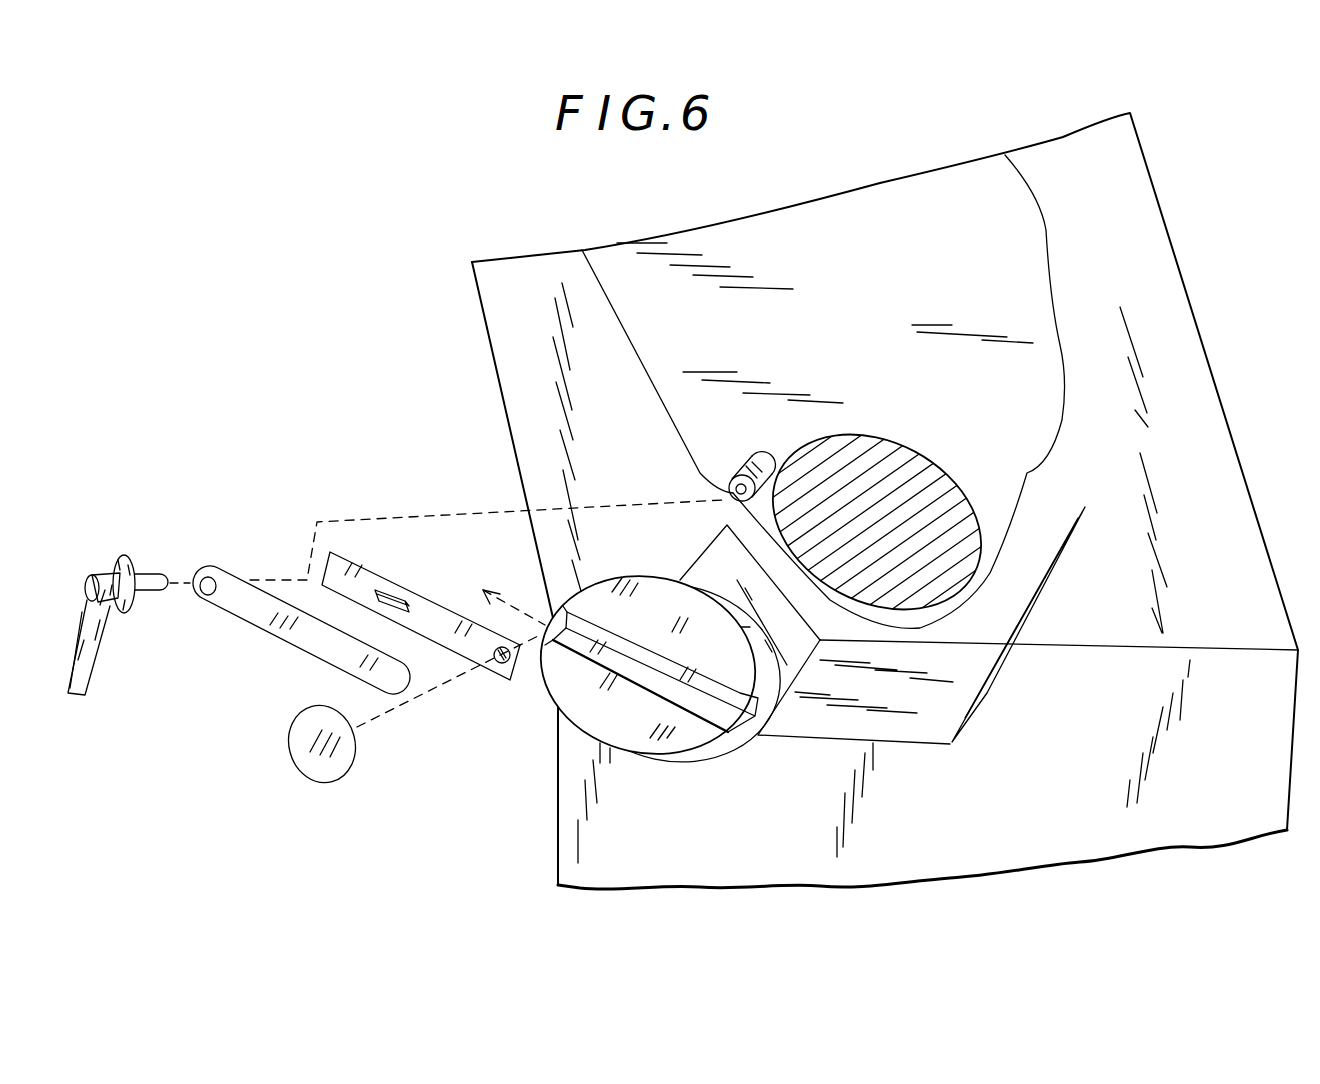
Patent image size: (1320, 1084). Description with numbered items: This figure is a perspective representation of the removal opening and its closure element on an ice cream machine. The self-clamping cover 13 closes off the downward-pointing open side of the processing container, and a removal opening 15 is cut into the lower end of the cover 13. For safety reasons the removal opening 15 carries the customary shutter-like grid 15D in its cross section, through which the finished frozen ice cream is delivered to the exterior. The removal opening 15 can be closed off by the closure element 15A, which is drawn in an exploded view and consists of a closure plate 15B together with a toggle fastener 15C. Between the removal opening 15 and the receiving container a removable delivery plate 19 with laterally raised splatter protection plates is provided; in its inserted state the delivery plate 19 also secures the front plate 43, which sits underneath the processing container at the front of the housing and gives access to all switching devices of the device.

The cover 13 is at (851, 268).
The removal opening 15 is at (895, 440).
The closure element 15A is at (497, 793).
The closure plate 15B is at (685, 742).
The toggle fastener 15C is at (257, 563).
The shutter-like grid 15D is at (933, 503).
The delivery plate 19 is at (985, 690).
The front plate 43 is at (1236, 768).